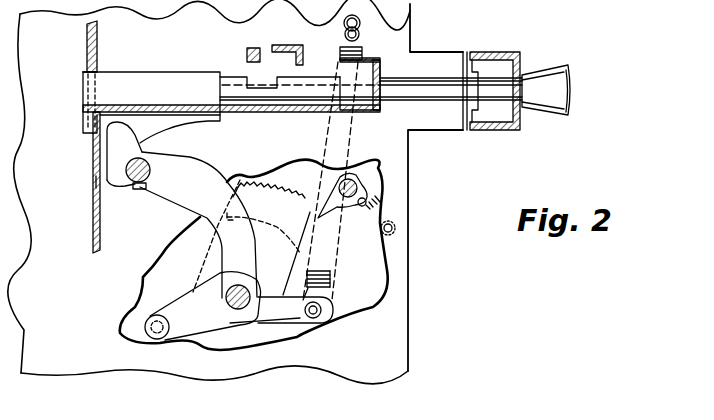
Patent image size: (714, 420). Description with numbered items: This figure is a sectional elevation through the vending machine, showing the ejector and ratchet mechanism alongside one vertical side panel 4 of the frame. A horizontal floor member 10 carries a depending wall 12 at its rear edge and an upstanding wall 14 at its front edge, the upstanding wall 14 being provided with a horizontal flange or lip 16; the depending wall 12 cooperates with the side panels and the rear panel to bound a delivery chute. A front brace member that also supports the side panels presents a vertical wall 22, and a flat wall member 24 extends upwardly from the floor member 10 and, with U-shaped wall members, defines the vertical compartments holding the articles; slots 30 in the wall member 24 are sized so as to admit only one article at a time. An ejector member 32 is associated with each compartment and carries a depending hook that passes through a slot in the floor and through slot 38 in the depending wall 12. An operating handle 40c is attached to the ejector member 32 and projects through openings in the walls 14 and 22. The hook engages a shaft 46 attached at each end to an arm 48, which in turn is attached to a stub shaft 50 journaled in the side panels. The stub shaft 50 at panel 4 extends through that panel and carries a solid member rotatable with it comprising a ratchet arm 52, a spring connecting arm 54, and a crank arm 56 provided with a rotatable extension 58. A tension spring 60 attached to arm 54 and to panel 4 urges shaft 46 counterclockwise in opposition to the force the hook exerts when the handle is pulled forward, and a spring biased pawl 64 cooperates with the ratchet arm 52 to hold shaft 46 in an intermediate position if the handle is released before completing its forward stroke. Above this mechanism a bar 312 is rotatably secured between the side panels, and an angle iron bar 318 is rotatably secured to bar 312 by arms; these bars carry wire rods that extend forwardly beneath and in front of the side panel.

The vertical side panel 4 is at (396, 328).
The horizontal floor member 10 is at (250, 112).
The depending wall 12 is at (93, 201).
The upstanding wall 14 is at (383, 70).
The horizontal flange or lip 16 is at (366, 58).
The vertical wall 22 is at (522, 118).
The flat wall member 24 is at (85, 50).
The slot 30 is at (95, 72).
The ejector member 32 is at (160, 80).
The slot 38 is at (95, 182).
The rod 40c is at (410, 101).
The shaft 46 is at (143, 192).
The arm 48 is at (183, 191).
The stub shaft 50 is at (228, 305).
The ratchet arm 52 is at (272, 203).
The spring connecting arm 54 is at (282, 313).
The crank arm 56 is at (197, 322).
The rotatable extension 58 is at (158, 340).
The tension spring 60 is at (333, 280).
The spring biased pawl 64 is at (352, 206).
The bar 312 is at (247, 52).
The angle iron bar 318 is at (289, 45).